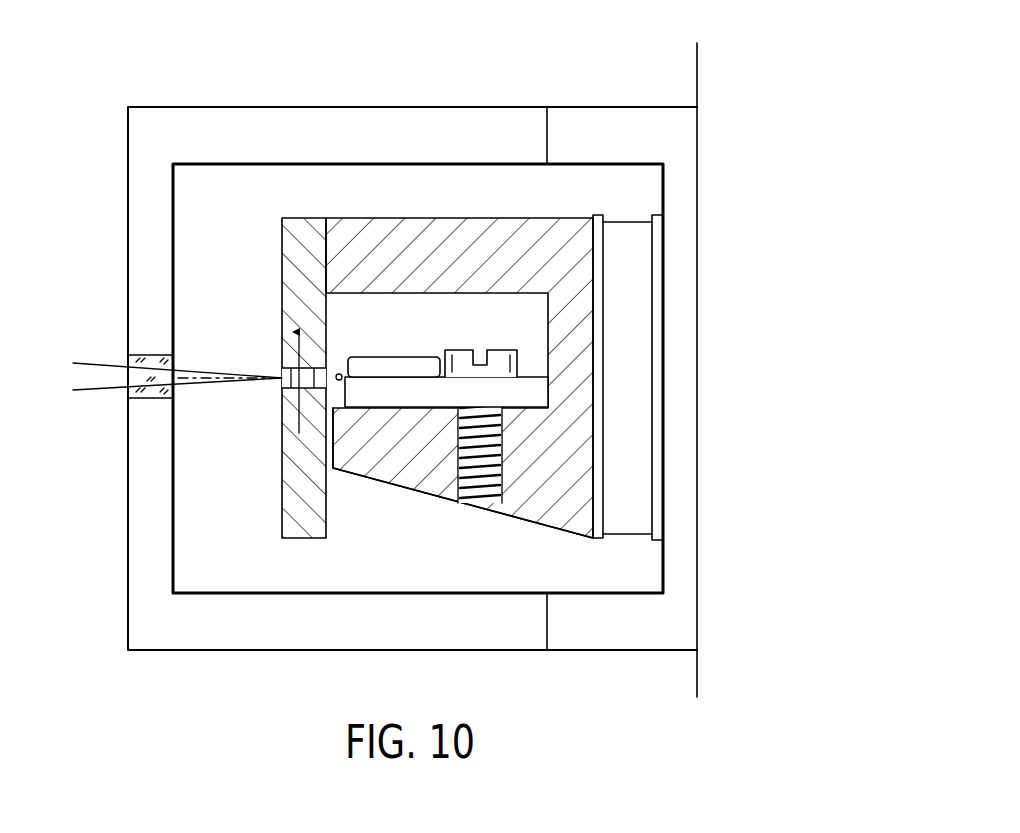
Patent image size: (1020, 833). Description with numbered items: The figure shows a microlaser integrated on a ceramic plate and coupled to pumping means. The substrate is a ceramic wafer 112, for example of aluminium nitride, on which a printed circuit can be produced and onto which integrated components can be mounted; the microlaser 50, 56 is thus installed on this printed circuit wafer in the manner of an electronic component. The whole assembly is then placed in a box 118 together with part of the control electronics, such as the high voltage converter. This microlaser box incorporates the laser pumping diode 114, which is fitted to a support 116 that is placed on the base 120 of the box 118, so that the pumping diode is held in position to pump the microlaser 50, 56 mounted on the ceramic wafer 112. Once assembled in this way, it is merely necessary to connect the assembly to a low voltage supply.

The box 118 is at (128, 160).
The base of the box 120 is at (598, 122).
The support 116 is at (458, 240).
The laser pumping diode 114 is at (417, 395).
The ceramic wafer 112 is at (290, 258).
The microlaser 56 is at (282, 376).
The microlaser 50 is at (338, 374).